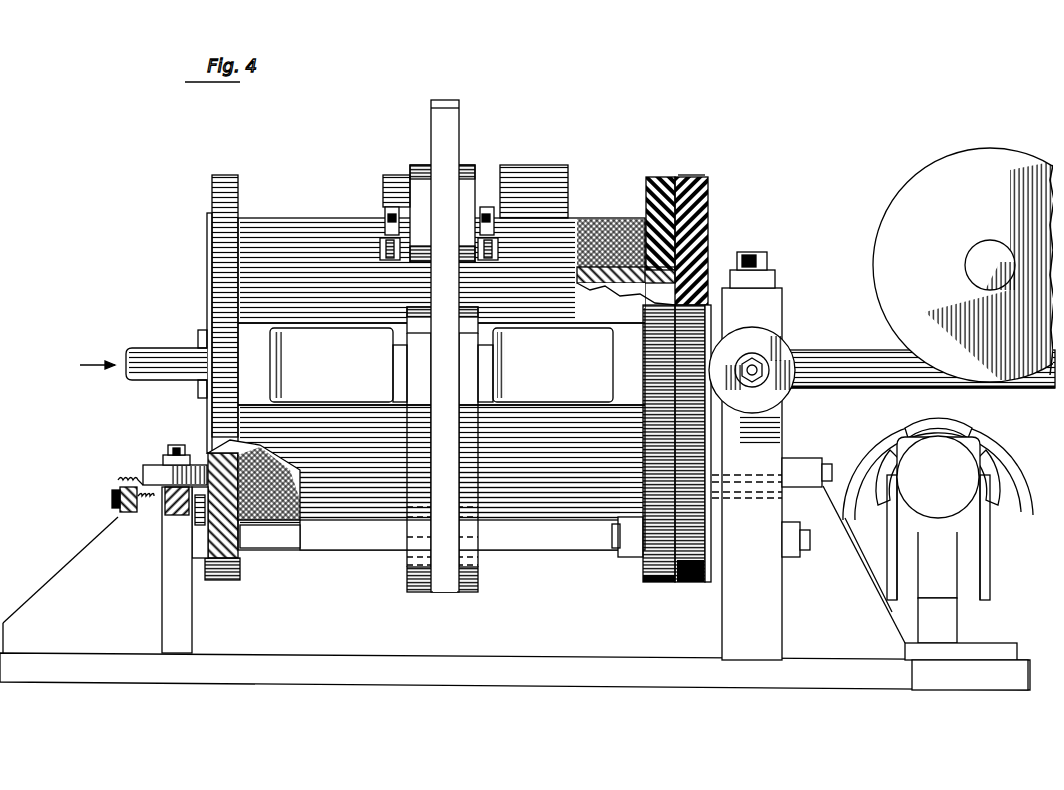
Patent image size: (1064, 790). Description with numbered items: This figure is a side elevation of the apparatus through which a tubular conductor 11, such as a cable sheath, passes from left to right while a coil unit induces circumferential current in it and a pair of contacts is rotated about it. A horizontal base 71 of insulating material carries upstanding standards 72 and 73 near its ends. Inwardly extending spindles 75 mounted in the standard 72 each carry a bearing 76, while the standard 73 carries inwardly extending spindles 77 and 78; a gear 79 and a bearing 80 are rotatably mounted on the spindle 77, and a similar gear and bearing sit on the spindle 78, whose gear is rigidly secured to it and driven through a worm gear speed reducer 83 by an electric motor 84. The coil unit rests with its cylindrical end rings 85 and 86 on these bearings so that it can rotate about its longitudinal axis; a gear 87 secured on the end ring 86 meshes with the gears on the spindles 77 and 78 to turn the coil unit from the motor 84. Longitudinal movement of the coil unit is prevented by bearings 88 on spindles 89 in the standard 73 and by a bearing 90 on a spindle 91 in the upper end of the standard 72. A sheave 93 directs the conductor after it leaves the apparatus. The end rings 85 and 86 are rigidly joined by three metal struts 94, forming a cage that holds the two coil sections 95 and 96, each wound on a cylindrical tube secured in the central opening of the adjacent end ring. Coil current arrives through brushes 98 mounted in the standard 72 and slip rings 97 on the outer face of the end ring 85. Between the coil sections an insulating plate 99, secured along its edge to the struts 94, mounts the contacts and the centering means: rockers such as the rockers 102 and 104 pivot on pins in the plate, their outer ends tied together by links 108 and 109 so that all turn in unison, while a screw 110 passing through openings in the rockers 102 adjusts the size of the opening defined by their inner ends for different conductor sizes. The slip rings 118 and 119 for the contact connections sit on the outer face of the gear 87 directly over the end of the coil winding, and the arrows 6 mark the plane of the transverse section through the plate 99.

The section line 6- 6 is at (450, 67).
The tubular conductor 11 is at (185, 347).
The horizontal base 71 is at (85, 660).
The standard 72 is at (162, 612).
The standard 73 is at (782, 606).
The spindles 75 is at (200, 560).
The bearing 76 is at (242, 576).
The spindle 77 is at (709, 583).
The spindle 78 is at (848, 522).
The gear 79 is at (690, 585).
The bearing 80 is at (647, 585).
The worm gear speed reducer 83 is at (938, 477).
The electric motor 84 is at (1005, 427).
The end ring 85 is at (235, 205).
The end ring 86 is at (645, 470).
The gear 87 is at (678, 405).
The bearings 88 is at (762, 415).
The spindles 89 is at (765, 385).
The bearing 90 is at (150, 468).
The spindle 91 is at (178, 445).
The sheave 93 is at (874, 262).
The metal struts 94 is at (370, 406).
The coil section 95 is at (302, 222).
The coil section 96 is at (568, 518).
The slip rings 97 is at (254, 497).
The brushes 98 is at (150, 512).
The plate 99 is at (459, 155).
The rocker 102 is at (407, 296).
The rocker 104 is at (460, 495).
The link 108 is at (440, 594).
The link 109 is at (460, 474).
The screw 110 is at (383, 200).
The slip ring 118 is at (706, 228).
The slip ring 119 is at (708, 250).